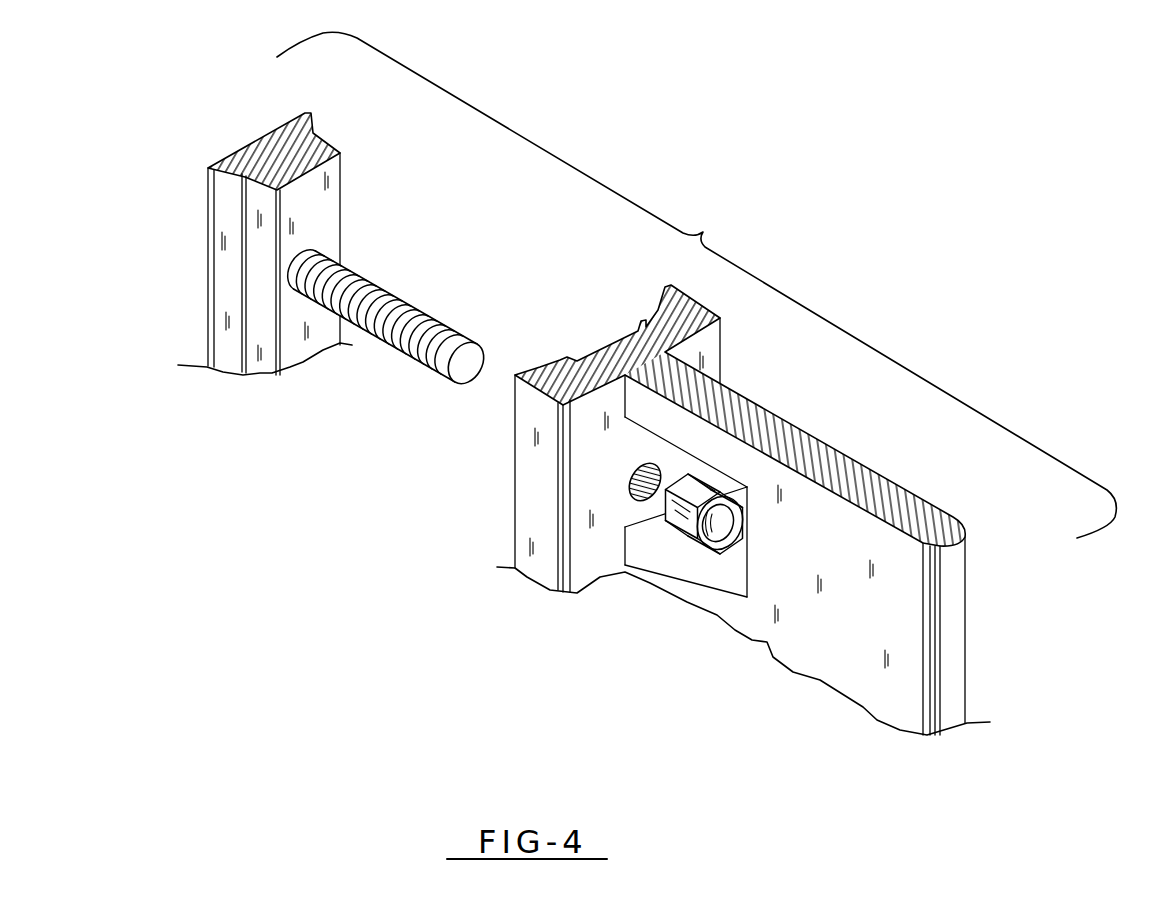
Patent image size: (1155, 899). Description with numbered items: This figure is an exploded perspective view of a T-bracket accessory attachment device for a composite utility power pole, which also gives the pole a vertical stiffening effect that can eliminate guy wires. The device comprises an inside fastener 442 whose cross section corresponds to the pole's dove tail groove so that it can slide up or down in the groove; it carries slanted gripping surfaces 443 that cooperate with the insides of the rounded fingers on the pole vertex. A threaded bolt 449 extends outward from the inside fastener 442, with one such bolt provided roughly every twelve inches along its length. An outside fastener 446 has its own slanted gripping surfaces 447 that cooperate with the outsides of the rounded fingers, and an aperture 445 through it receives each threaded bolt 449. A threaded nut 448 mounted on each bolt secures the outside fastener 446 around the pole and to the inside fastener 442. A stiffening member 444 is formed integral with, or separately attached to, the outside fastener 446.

The inside fastener 442 is at (240, 155).
The slanted gripping surfaces 443 is at (316, 126).
The stiffening member 444 is at (895, 597).
The aperture 445 is at (632, 480).
The outside fastener 446 is at (580, 565).
The slanted gripping surfaces 447 is at (518, 373).
The threaded nut 448 is at (683, 548).
The threaded bolt 449 is at (430, 366).